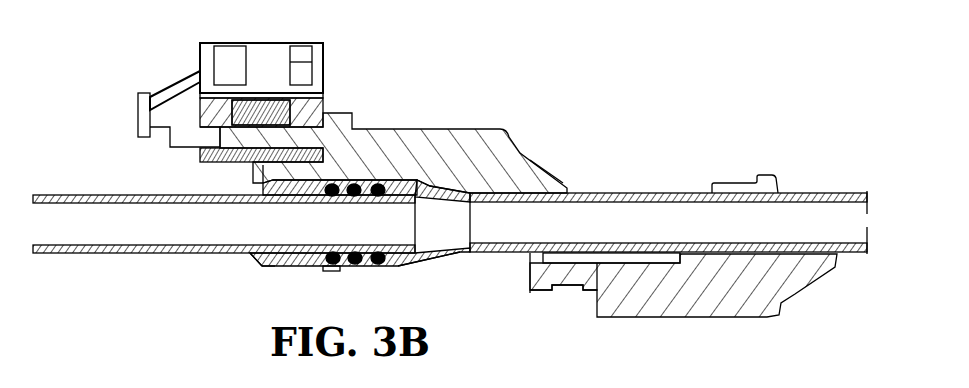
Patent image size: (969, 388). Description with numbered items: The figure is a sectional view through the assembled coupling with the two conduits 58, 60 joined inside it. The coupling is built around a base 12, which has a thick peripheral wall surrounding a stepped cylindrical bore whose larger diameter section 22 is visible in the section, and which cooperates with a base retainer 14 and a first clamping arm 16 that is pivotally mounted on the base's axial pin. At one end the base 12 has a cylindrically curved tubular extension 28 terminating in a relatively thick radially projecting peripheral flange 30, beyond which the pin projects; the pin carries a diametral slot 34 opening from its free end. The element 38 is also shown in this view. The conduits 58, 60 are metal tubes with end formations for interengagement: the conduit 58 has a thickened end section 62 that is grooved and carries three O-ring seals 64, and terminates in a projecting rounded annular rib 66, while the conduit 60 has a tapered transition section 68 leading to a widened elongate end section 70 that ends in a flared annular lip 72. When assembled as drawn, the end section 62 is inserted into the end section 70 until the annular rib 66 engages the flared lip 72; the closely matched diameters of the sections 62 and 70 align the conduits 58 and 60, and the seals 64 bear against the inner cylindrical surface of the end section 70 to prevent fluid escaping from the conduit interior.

The base 12 is at (449, 120).
The base retainer 14 is at (803, 282).
The first clamping arm 16 is at (197, 52).
The larger diameter section 22 is at (654, 258).
The cylindrically curved tubular extension 28 is at (320, 172).
The radially projecting peripheral flange 30 is at (273, 170).
The diametral slot 34 is at (190, 143).
The threaded portion 38 is at (313, 137).
The conduit 58 is at (108, 255).
The conduit 60 is at (647, 192).
The thickened end section 62 is at (300, 252).
The O-ring seals 64 is at (379, 198).
The projecting rounded annular rib 66 is at (260, 253).
The tapered transition section 68 is at (467, 250).
The widened elongate end section 70 is at (398, 266).
The flared annular lip 72 is at (268, 262).